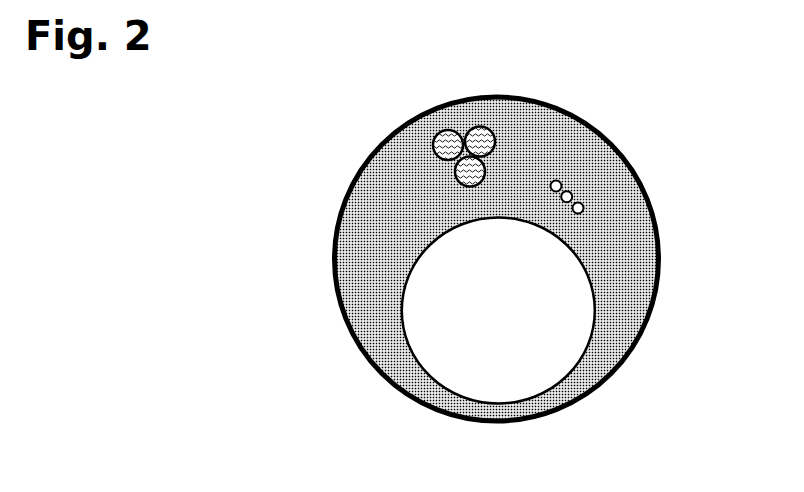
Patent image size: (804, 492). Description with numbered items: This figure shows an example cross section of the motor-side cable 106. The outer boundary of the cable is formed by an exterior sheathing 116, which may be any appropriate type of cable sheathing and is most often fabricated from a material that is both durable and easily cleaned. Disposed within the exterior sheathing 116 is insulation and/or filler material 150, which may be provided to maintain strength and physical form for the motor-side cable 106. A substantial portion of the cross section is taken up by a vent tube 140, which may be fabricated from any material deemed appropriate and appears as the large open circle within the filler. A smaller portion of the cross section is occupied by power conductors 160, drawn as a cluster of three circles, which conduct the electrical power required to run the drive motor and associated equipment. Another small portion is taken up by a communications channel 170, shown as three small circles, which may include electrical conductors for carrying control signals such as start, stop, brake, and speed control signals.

The motor-side cable 106 is at (268, 333).
The exterior sheathing 116 is at (652, 312).
The vent tube 140 is at (545, 368).
The filler material 150 is at (633, 243).
The power conductors 160 is at (478, 140).
The communications channel 170 is at (565, 198).